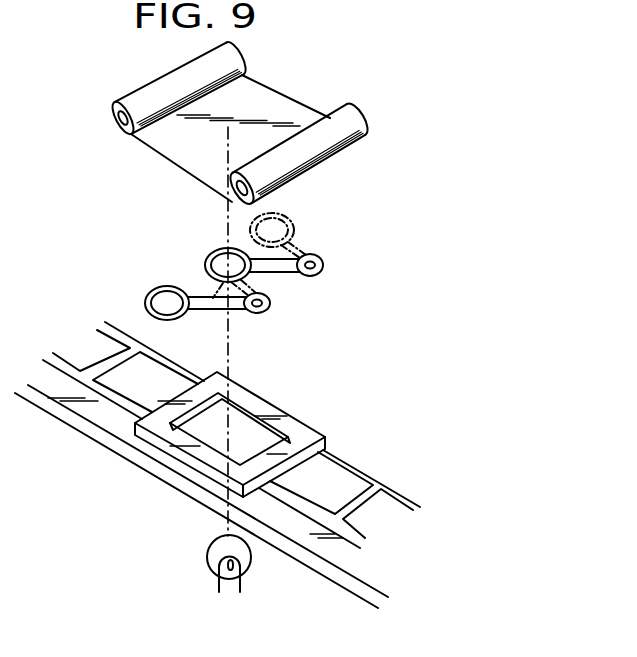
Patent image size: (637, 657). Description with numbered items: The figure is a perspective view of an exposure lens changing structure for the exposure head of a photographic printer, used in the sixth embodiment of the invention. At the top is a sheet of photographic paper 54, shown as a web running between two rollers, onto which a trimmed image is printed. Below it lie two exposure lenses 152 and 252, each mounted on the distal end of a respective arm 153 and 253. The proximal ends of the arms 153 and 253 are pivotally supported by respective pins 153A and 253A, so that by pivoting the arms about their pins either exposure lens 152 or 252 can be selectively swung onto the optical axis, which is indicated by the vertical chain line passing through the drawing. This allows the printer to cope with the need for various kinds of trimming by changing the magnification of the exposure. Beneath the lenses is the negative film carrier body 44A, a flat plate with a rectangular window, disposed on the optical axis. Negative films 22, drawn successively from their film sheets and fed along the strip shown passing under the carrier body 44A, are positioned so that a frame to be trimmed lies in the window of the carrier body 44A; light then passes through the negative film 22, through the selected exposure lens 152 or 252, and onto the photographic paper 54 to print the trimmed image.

The photographic paper 54 is at (278, 102).
The exposure lens 152 is at (213, 255).
The arm 153 is at (318, 255).
The pin 153A is at (325, 270).
The exposure lens 252 is at (147, 303).
The arm 253 is at (213, 302).
The pin 253A is at (262, 313).
The negative film carrier body 44A is at (158, 428).
The negative film 22 is at (312, 512).